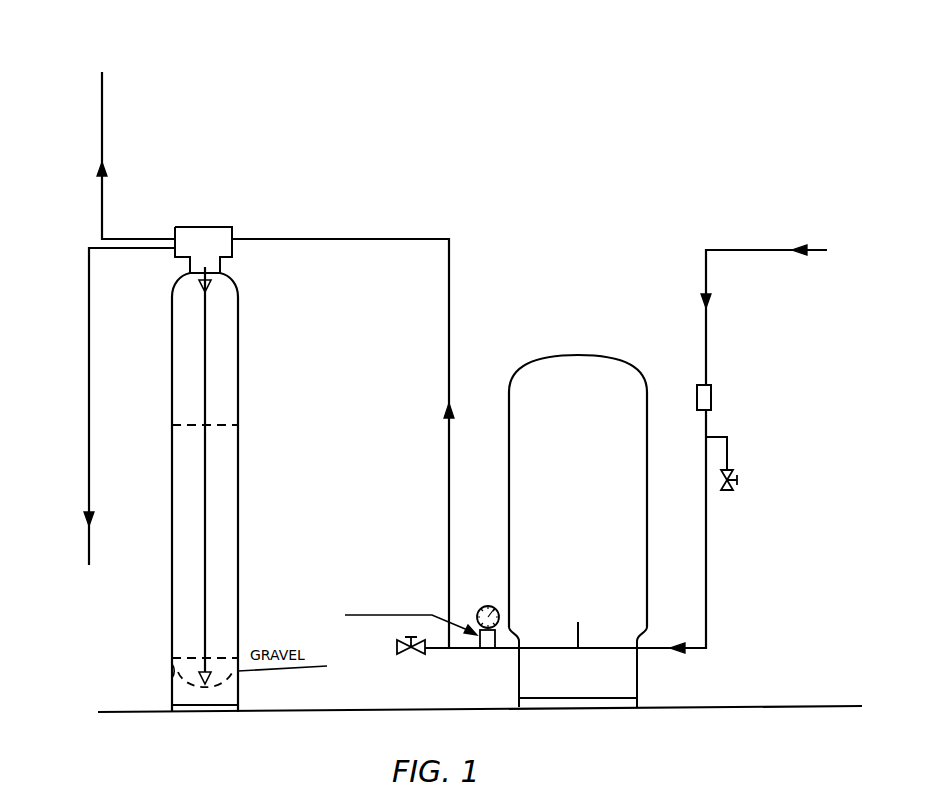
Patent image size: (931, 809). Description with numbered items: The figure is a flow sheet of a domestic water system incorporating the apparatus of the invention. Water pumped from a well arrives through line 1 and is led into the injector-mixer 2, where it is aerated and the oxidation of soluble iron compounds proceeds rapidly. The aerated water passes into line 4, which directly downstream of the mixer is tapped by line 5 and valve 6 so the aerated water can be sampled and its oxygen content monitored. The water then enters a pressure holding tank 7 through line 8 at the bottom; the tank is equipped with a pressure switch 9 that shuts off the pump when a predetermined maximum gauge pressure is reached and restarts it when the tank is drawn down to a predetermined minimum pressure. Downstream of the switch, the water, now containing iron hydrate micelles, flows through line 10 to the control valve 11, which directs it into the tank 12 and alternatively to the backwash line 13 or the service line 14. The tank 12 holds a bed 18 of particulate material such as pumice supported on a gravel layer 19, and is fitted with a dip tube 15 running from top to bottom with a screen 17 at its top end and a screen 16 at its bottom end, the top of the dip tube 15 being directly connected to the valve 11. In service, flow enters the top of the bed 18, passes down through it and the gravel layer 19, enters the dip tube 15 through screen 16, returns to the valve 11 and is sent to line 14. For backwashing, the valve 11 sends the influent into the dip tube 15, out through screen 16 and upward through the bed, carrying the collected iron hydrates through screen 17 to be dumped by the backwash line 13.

The line 1 is at (706, 281).
The injector-mixer 2 is at (712, 393).
The line 4 is at (708, 590).
The line 5 is at (729, 451).
The valve 6 is at (734, 486).
The tank 7 is at (648, 578).
The line 8 is at (578, 636).
The pressure switch 9 is at (485, 650).
The line 10 is at (449, 488).
The control valve 11 is at (208, 227).
The tank 12 is at (238, 392).
The backwash line 13 is at (89, 422).
The service line 14 is at (102, 139).
The dip tube 15 is at (205, 617).
The screen 16 is at (214, 682).
The screen 17 is at (210, 291).
The bed 18 is at (200, 547).
The gravel layer 19 is at (175, 663).